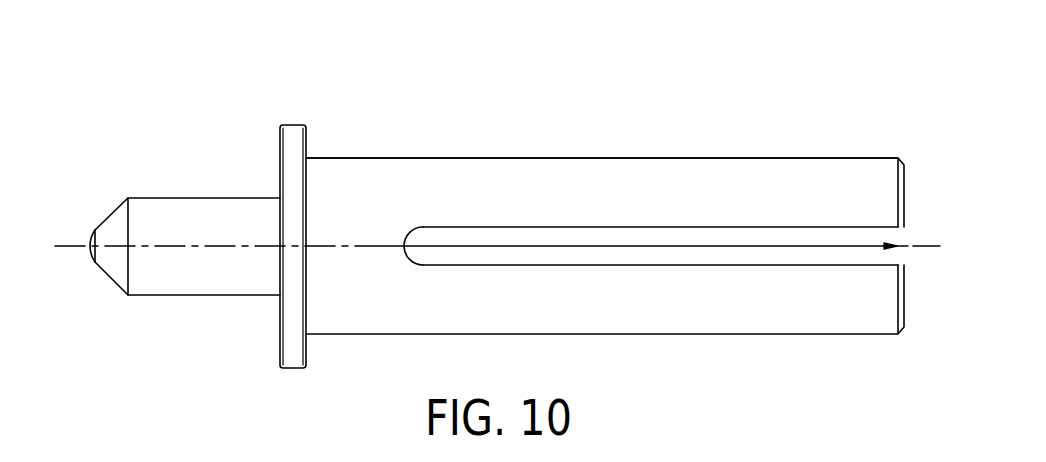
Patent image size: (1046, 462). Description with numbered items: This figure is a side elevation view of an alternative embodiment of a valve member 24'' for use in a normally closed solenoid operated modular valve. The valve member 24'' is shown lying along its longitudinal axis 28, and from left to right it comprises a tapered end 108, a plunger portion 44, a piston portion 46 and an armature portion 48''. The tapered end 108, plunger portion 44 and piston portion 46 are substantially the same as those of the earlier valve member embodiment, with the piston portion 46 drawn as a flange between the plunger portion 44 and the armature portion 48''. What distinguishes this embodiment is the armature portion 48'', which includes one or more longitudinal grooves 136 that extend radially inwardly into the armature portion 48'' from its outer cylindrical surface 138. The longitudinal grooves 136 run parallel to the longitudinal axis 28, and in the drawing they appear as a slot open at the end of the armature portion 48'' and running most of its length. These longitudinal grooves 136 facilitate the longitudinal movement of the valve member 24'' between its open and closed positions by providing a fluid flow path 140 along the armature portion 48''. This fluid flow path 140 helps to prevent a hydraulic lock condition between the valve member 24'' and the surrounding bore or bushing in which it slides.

The valve member 24'' is at (505, 195).
The longitudinal axis 28 is at (63, 245).
The tapered end 108 is at (116, 268).
The plunger portion 44 is at (202, 196).
The piston portion 46 is at (298, 116).
The armature portion 48'' is at (602, 150).
The outer cylindrical surface 138 is at (685, 189).
The fluid flow path 140 is at (572, 247).
The longitudinal grooves 136 is at (653, 253).